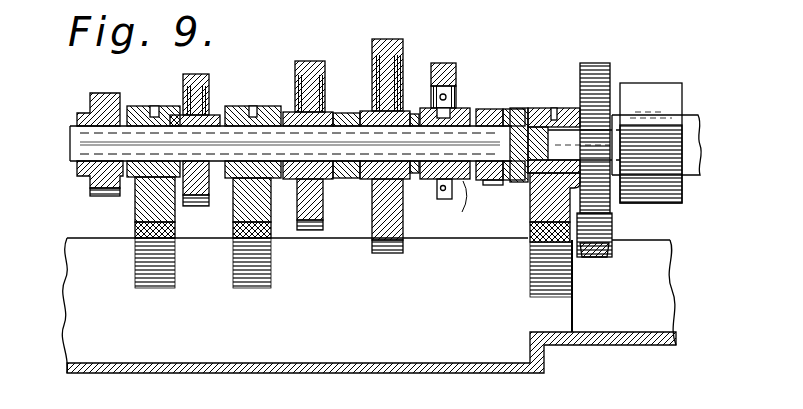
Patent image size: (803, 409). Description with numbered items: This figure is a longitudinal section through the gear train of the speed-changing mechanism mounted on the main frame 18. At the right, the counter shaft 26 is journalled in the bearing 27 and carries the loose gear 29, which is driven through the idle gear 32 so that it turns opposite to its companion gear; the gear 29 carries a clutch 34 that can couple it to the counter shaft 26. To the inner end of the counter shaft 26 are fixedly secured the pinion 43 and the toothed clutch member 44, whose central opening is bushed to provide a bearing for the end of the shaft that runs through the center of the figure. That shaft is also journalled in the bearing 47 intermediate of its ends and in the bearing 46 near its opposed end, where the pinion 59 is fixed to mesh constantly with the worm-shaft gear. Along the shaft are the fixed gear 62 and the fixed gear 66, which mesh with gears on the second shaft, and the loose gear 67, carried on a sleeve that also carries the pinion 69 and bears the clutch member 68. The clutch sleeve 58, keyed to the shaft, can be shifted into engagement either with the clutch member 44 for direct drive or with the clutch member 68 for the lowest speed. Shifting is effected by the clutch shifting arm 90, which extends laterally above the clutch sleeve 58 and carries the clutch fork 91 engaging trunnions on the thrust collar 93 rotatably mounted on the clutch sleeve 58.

The main frame 18 is at (402, 363).
The counter shaft 26 is at (565, 140).
The bearing 27 is at (541, 98).
The loose gear 29 is at (601, 63).
The idle gear 32 is at (598, 246).
The clutch 34 is at (672, 75).
The pinion 43 is at (507, 109).
The toothed clutch member 44 is at (490, 109).
The bearing 46 is at (142, 106).
The bearing 47 is at (251, 106).
The clutch sleeve 58 is at (461, 212).
The pinion 59 is at (88, 107).
The gear 62 is at (200, 74).
The gear 66 is at (307, 61).
The gear 67 is at (396, 34).
The clutch member 68 is at (412, 113).
The pinion 69 is at (350, 105).
The clutch shifting arm 90 is at (445, 62).
The clutch fork 91 is at (460, 109).
The thrust collar 93 is at (437, 191).